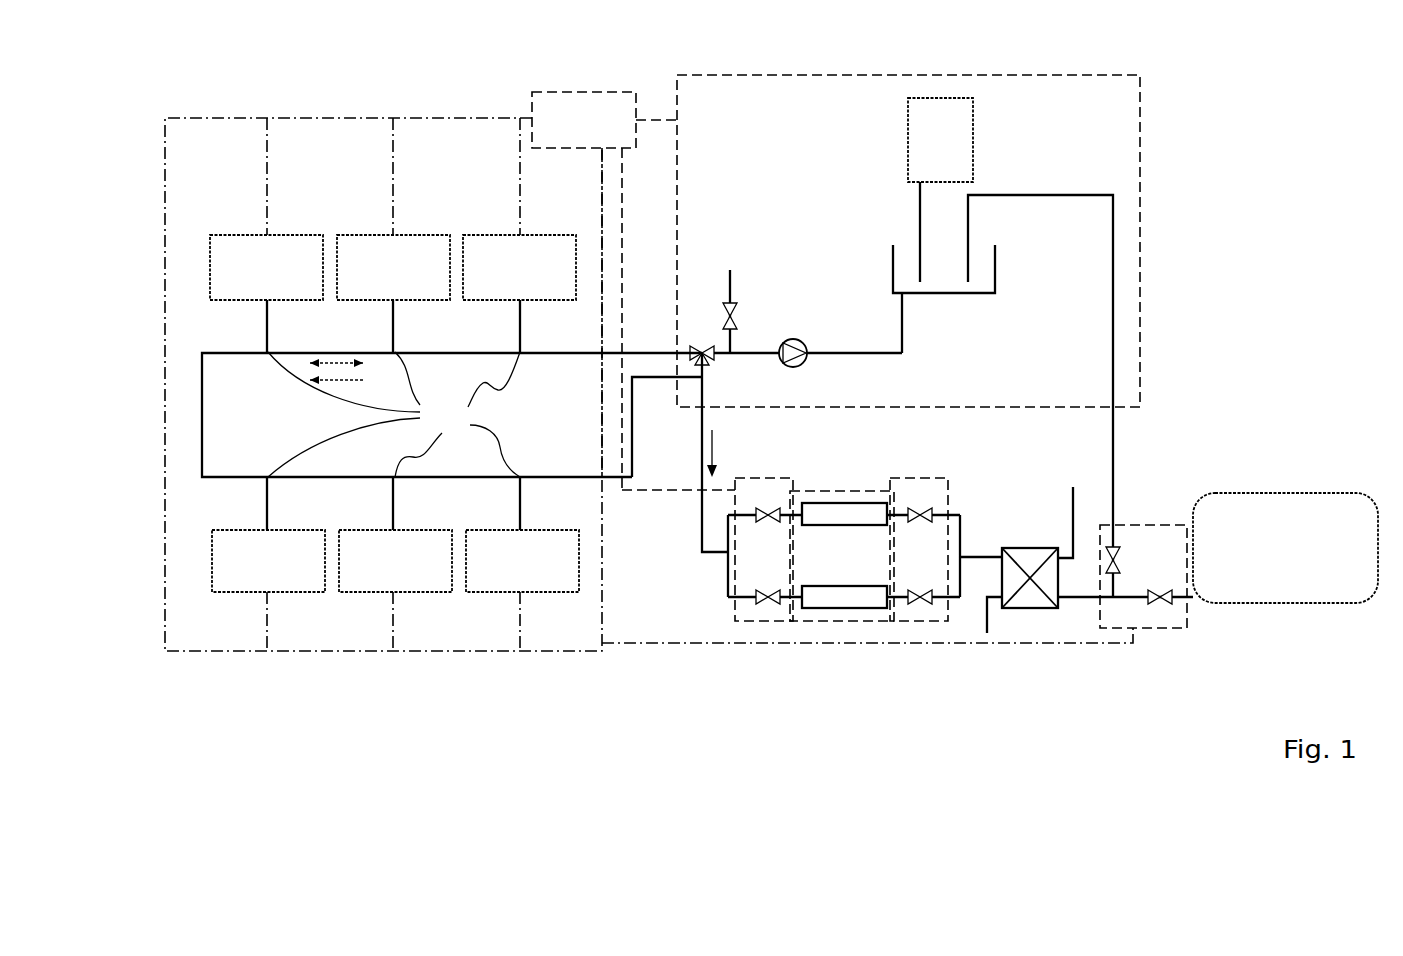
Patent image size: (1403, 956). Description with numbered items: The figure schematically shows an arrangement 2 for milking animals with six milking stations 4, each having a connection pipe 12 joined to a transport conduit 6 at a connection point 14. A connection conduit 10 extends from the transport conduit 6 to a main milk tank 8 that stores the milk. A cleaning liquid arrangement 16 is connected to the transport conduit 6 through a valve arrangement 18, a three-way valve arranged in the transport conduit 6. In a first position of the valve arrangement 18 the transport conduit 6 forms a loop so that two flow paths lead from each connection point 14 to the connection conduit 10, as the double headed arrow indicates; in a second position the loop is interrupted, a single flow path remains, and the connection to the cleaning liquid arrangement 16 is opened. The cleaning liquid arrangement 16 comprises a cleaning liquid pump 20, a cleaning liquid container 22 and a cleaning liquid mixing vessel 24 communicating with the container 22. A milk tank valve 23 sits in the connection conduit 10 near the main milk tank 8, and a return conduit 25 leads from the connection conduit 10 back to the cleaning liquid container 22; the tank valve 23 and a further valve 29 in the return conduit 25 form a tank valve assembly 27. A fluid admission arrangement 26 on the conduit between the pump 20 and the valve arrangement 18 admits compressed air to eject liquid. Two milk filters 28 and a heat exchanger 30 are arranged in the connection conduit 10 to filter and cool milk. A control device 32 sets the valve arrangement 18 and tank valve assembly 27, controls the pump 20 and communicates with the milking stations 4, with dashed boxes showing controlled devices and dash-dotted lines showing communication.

The arrangement for milking animals 2 is at (1185, 113).
The milking station 4 is at (275, 282).
The transport conduit 6 is at (202, 417).
The main milk tank 8 is at (1292, 567).
The connection conduit 10 is at (962, 605).
The connection pipe 12 is at (520, 333).
The connection point 14 is at (452, 414).
The cleaning liquid arrangement 16 is at (829, 178).
The valve arrangement 18 is at (703, 322).
The cleaning liquid pump 20 is at (795, 340).
The cleaning liquid container 22 is at (957, 293).
The milk tank valve 23 is at (1165, 603).
The cleaning liquid mixing vessel 24 is at (957, 157).
The return conduit 25 is at (1117, 425).
The fluid admission arrangement 26 is at (752, 284).
The tank valve assembly 27 is at (1118, 625).
The milk filter 28 is at (880, 525).
The further valve 29 is at (1117, 552).
The heat exchanger 30 is at (1030, 560).
The control device 32 is at (600, 136).